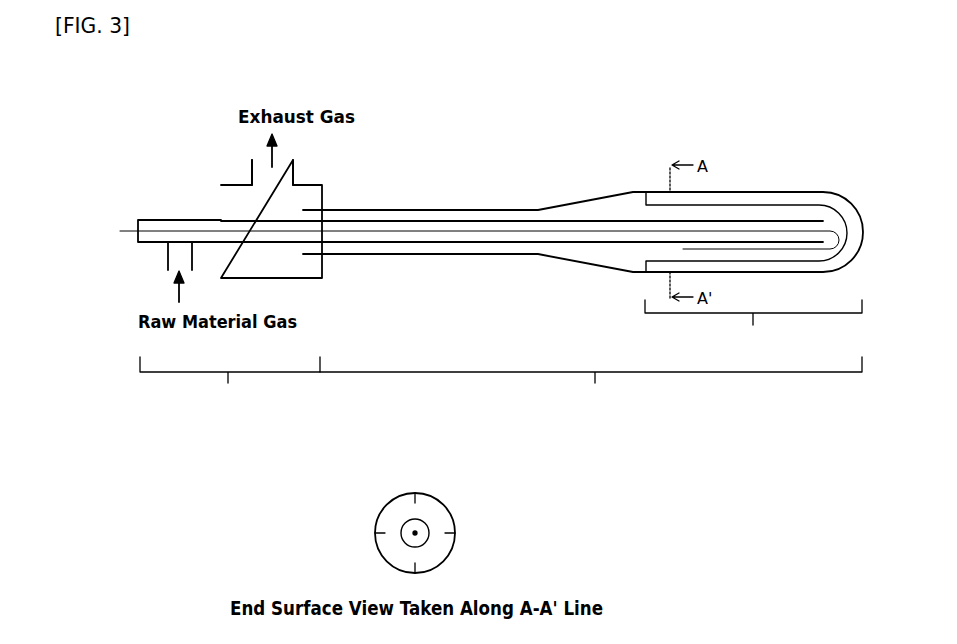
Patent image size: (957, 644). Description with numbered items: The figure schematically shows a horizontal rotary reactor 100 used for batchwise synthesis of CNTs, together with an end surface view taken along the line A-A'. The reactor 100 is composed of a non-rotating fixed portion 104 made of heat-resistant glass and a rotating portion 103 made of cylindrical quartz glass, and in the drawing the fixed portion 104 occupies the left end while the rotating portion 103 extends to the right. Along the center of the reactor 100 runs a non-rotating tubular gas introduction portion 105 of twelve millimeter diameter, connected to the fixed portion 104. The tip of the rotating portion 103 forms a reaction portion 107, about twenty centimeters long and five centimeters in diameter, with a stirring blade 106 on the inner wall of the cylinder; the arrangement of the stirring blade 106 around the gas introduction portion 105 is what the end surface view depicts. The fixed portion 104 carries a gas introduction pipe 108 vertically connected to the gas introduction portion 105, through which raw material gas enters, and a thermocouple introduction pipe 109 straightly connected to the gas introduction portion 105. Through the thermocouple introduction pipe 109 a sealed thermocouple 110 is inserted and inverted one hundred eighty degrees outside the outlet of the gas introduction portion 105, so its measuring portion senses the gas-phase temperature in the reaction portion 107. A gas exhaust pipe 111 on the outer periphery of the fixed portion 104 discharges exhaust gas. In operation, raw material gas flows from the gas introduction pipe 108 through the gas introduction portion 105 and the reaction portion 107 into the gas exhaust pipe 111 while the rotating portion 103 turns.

The rotary reactor 100 is at (533, 152).
The rotating portion 103 is at (583, 305).
The fixed portion 104 is at (231, 276).
The gas introduction portion 105 is at (370, 220).
The stirring blade 106 is at (778, 204).
The reaction portion 107 is at (753, 326).
The gas introduction pipe 108 is at (166, 268).
The thermocouple introduction pipe 109 is at (153, 220).
The thermocouple 110 is at (468, 231).
The gas exhaust pipe 111 is at (252, 174).